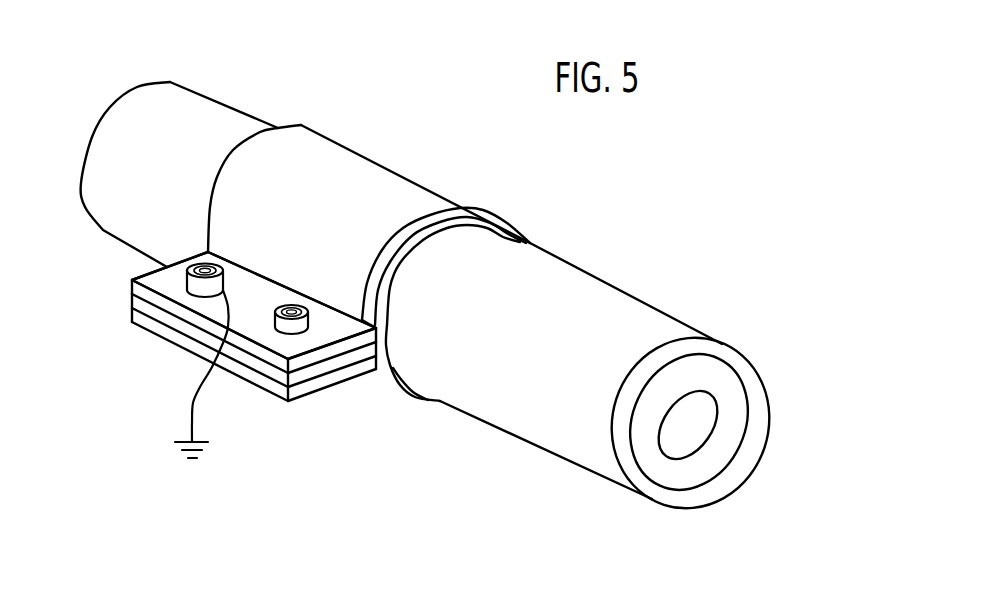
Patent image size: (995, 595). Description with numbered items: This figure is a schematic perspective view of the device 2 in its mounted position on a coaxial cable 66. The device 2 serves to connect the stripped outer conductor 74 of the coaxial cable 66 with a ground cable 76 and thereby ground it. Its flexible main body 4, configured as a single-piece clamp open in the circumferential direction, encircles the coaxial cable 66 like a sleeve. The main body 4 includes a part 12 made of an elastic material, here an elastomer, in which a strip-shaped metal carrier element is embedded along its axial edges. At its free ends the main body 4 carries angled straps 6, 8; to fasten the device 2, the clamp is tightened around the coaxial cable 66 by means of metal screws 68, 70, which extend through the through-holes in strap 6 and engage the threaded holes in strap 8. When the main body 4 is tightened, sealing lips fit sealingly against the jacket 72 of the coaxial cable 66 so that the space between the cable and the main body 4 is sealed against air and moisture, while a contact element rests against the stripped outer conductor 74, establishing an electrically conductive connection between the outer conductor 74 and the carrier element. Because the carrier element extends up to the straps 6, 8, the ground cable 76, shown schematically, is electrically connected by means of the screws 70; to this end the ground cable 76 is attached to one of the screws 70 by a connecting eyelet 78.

The device 2 is at (445, 134).
The main body 4 is at (347, 138).
The strap 6 is at (137, 287).
The strap 8 is at (273, 388).
The part made of elastic material 12 is at (425, 200).
The coaxial cable 66 is at (585, 305).
The metal screw 68 is at (300, 326).
The metal screw 70 is at (155, 270).
The jacket 72 is at (722, 480).
The outer conductor 74 is at (743, 378).
The ground cable 76 is at (192, 403).
The connecting eyelet 78 is at (222, 288).